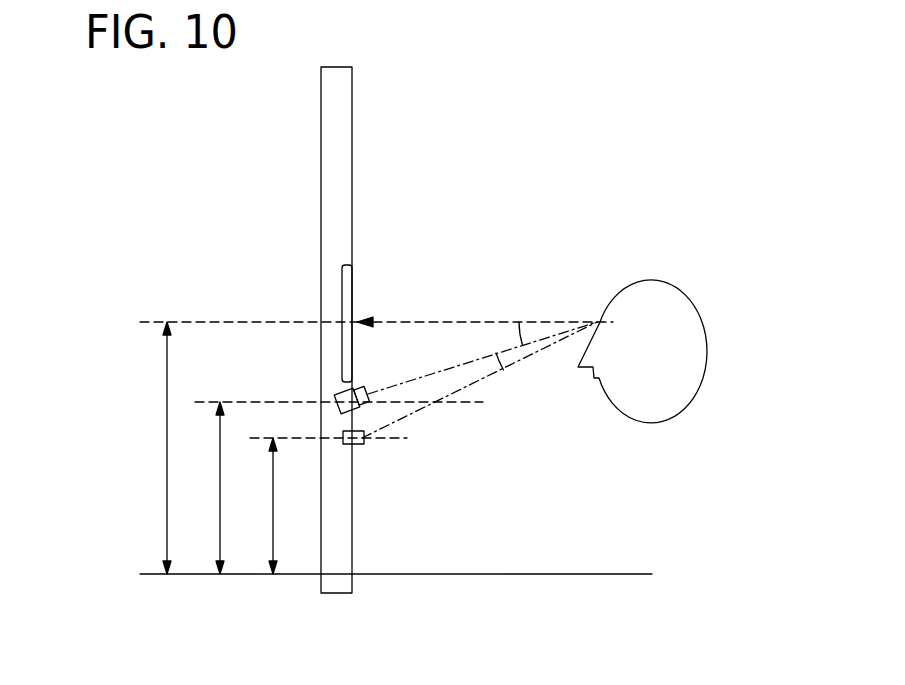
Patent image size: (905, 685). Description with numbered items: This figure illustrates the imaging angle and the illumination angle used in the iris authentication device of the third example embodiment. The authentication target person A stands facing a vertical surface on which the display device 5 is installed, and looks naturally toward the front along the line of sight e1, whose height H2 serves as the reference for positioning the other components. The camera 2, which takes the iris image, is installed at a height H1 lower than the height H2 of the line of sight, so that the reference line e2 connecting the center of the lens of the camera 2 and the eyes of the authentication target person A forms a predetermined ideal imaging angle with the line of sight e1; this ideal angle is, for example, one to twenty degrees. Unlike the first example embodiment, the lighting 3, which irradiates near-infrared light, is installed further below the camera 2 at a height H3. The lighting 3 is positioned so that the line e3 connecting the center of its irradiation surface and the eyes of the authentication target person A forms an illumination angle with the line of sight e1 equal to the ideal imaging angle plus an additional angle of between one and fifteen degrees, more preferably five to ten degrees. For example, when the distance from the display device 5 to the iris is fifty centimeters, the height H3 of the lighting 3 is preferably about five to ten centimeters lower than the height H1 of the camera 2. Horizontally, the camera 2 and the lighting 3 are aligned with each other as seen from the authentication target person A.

The camera 2 is at (340, 391).
The lighting 3 is at (362, 446).
The display device 5 is at (353, 296).
The authentication target person A is at (682, 292).
The line of sight e1 is at (470, 321).
The reference line e2 is at (428, 376).
The line connecting lighting and eyes e3 is at (428, 409).
The height of camera installation position H1 is at (335, 488).
The height of line of sight H2 is at (248, 448).
The height of lighting installation position H3 is at (325, 506).